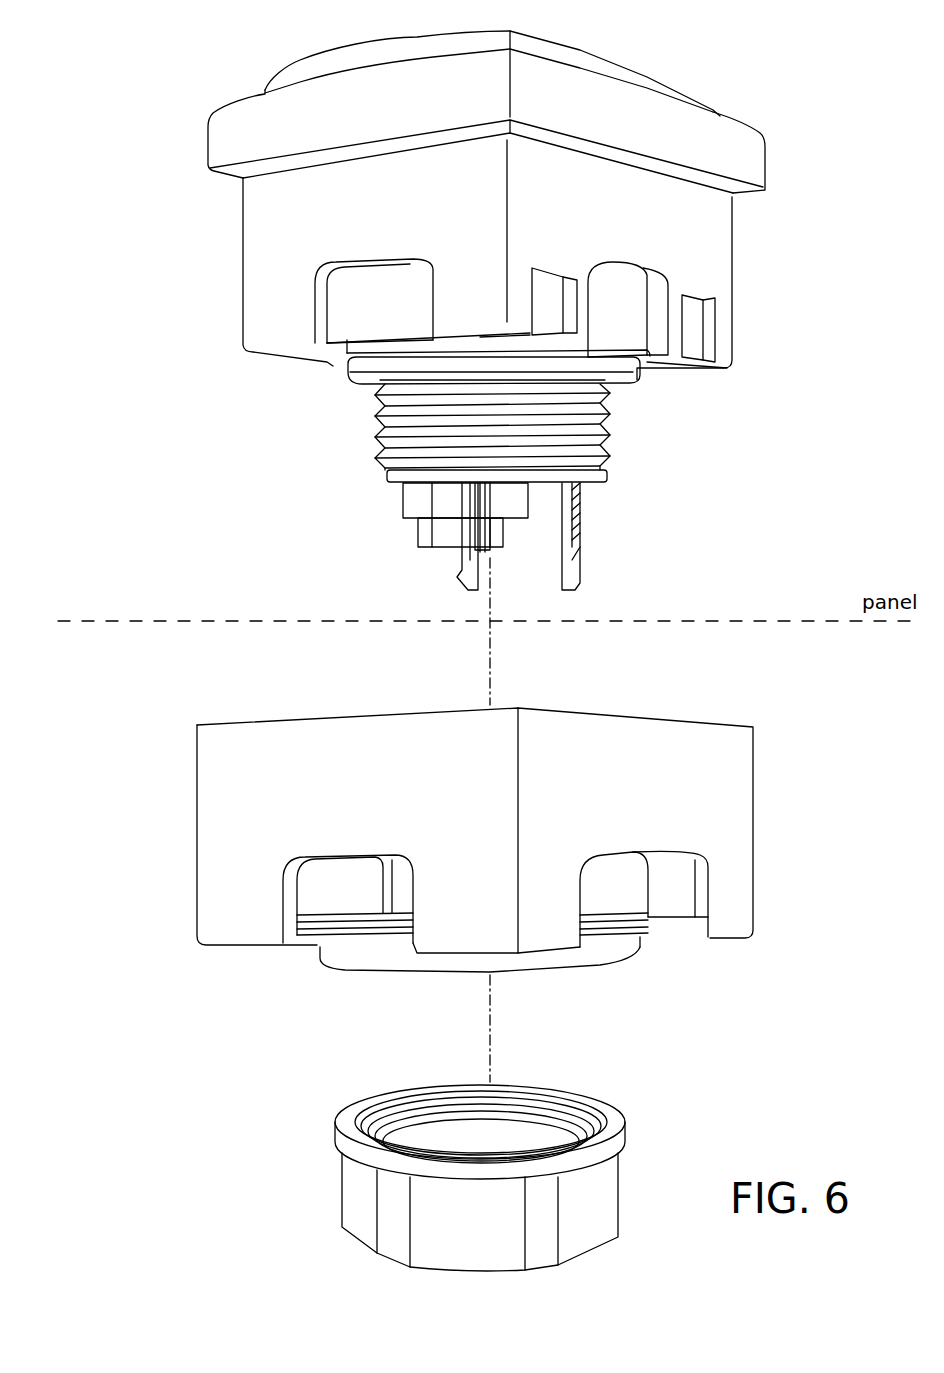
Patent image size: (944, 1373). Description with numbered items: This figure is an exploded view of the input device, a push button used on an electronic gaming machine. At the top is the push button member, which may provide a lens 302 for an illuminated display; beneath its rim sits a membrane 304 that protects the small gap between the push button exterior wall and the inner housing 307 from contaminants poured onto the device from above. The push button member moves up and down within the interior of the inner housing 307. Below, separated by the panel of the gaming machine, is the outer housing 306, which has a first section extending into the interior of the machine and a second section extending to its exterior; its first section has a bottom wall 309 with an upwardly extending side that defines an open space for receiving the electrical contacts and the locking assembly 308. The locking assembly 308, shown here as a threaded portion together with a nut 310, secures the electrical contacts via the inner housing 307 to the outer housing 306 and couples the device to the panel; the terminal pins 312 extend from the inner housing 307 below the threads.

The lens 302 is at (620, 63).
The membrane 304 is at (743, 144).
The outer housing 306 is at (730, 758).
The inner housing 307 is at (715, 250).
The locking assembly 308 is at (607, 418).
The bottom wall 309 is at (620, 955).
The nut 310 is at (597, 1180).
The terminal pins 312 is at (577, 580).